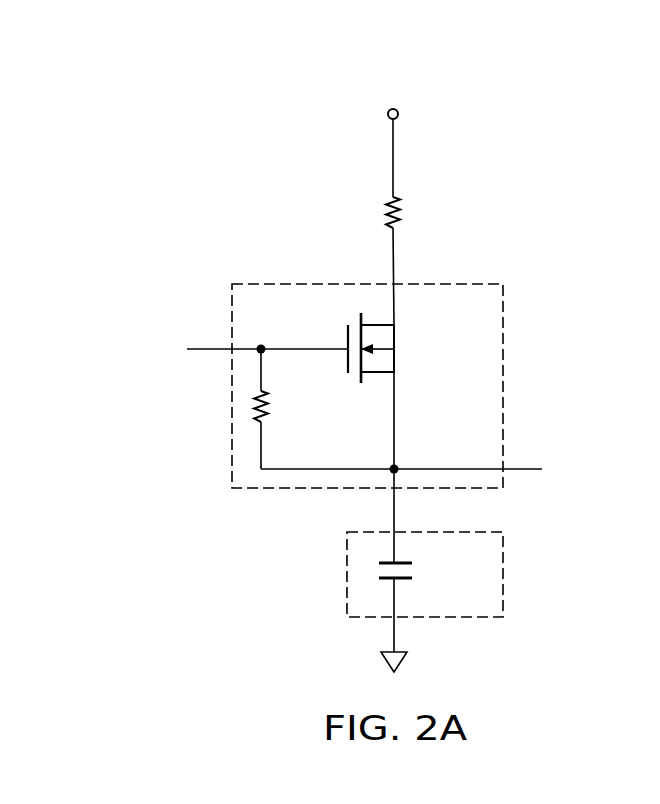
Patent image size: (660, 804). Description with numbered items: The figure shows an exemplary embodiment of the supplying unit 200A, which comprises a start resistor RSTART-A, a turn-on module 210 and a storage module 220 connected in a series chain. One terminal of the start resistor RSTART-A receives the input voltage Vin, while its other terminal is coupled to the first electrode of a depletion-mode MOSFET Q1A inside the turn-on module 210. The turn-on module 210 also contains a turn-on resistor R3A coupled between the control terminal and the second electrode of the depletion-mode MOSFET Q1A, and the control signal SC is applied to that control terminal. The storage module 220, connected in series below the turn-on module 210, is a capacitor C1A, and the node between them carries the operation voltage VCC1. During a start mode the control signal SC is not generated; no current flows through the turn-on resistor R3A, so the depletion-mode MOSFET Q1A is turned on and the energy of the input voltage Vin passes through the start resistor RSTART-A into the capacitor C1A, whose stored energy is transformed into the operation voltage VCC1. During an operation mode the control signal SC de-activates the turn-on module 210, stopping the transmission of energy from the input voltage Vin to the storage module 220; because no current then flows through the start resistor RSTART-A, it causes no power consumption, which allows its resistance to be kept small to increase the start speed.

The supplying unit 200A is at (227, 105).
The turn-on module 210 is at (504, 315).
The storage module 220 is at (504, 567).
The input voltage Vin is at (391, 129).
The start resistor RSTART-A is at (408, 213).
The depletion-mode MOSFET Q1A is at (402, 347).
The turn-on resistor R3A is at (273, 407).
The control signal SC is at (247, 348).
The operation voltage VCC1 is at (439, 465).
The capacitor C1A is at (415, 572).